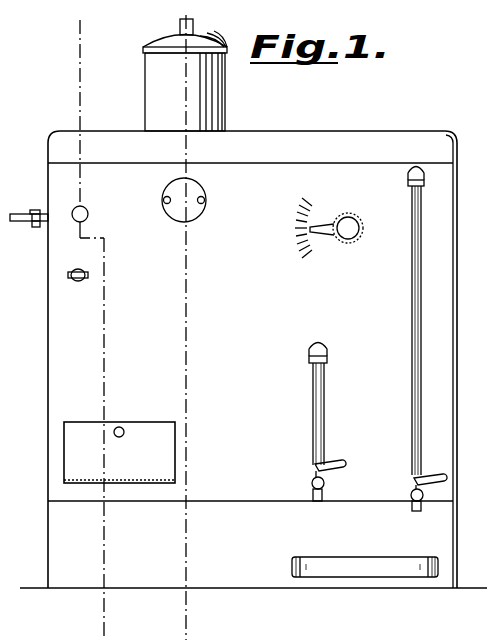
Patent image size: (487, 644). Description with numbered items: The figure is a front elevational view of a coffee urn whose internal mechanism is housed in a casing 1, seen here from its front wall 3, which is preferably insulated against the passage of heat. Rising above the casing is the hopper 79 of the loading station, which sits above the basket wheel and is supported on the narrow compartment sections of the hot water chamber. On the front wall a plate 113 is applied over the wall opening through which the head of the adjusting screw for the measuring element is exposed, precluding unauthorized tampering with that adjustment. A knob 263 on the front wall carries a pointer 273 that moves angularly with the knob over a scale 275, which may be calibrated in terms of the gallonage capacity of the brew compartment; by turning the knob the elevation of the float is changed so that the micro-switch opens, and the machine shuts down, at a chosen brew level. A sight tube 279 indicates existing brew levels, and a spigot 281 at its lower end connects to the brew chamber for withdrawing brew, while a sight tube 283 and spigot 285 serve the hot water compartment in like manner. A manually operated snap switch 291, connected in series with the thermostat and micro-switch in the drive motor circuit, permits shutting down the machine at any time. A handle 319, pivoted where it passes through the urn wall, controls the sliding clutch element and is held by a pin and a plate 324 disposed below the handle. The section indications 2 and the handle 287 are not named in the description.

The casing 1 is at (258, 352).
The section line 2- 2 is at (183, 25).
The front wall 3 is at (78, 37).
The hopper 79 is at (178, 103).
The plate 113 is at (175, 207).
The knob 263 is at (350, 225).
The pointer 273 is at (320, 238).
The scale 275 is at (284, 245).
The sight tube 279 is at (312, 400).
The spigot 281 is at (312, 482).
The sight tube 283 is at (411, 318).
The spigot 285 is at (411, 486).
The handle 287 is at (356, 557).
The snap switch 291 is at (78, 284).
The handle 319 is at (25, 203).
The plate 324 is at (42, 229).